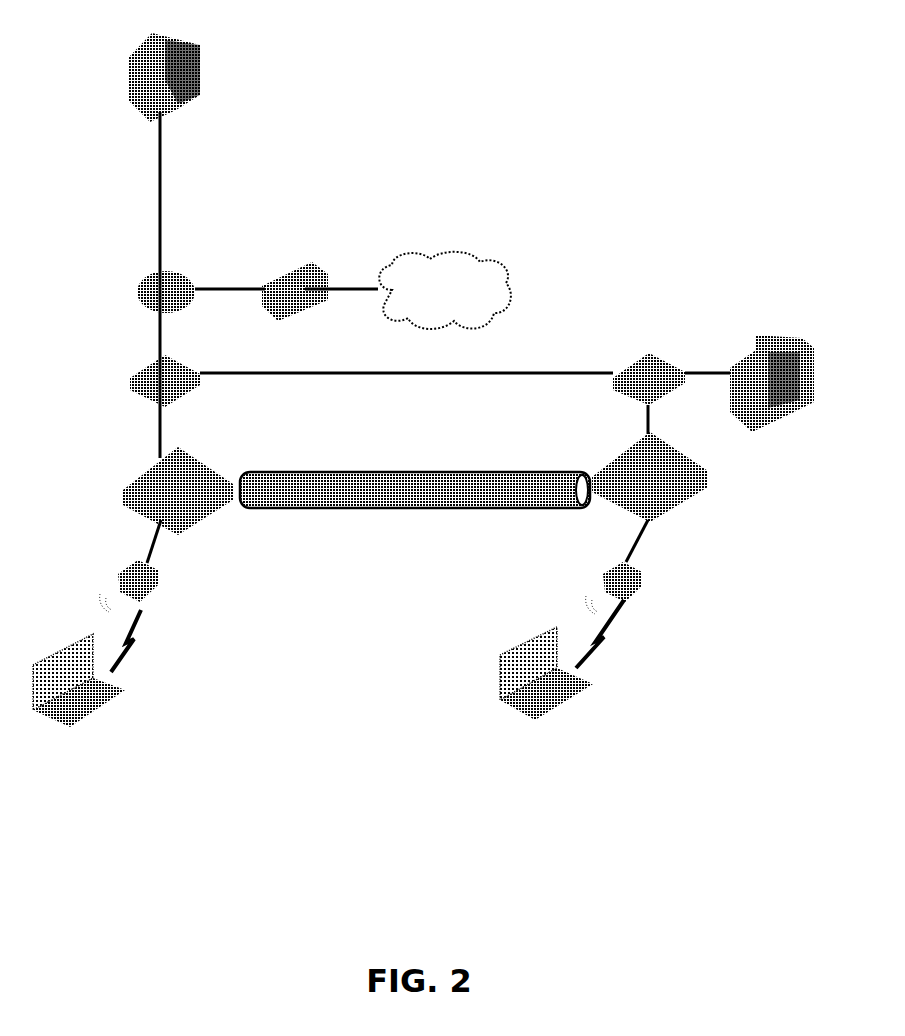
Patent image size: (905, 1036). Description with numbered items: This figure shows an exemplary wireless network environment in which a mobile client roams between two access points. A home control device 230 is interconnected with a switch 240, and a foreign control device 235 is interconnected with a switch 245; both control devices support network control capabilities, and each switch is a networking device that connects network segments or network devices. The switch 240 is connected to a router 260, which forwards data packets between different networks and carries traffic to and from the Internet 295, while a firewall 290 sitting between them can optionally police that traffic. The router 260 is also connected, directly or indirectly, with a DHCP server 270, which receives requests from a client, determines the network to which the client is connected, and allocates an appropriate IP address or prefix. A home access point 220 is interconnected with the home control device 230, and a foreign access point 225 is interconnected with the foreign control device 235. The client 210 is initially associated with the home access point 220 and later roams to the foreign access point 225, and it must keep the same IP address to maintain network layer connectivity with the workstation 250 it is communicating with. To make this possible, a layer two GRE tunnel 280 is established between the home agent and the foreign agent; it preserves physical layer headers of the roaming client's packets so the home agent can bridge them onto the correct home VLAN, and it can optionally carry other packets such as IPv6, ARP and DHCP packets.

The client 210 is at (468, 712).
The home access point 220 is at (70, 602).
The foreign access point 225 is at (667, 614).
The home control device 230 is at (70, 509).
The foreign control device 235 is at (738, 522).
The switch 240 is at (70, 407).
The switch 245 is at (615, 342).
The workstation 250 is at (763, 328).
The router 260 is at (69, 315).
The DHCP server 270 is at (67, 80).
The GRE tunnel 280 is at (407, 559).
The firewall 290 is at (287, 250).
The Internet 295 is at (418, 315).